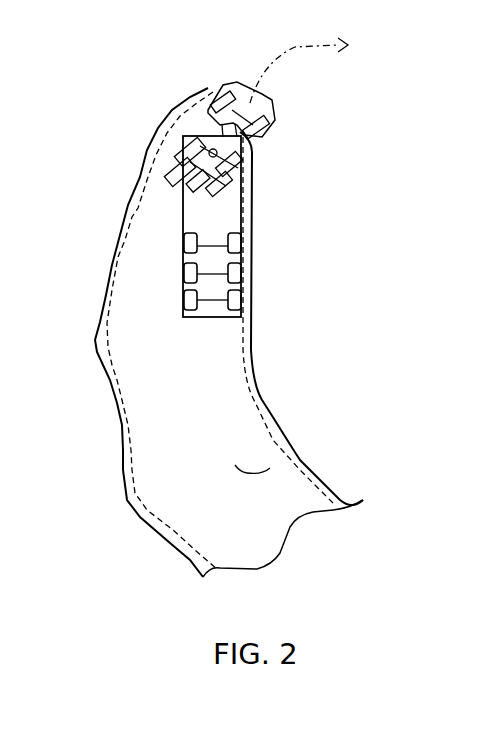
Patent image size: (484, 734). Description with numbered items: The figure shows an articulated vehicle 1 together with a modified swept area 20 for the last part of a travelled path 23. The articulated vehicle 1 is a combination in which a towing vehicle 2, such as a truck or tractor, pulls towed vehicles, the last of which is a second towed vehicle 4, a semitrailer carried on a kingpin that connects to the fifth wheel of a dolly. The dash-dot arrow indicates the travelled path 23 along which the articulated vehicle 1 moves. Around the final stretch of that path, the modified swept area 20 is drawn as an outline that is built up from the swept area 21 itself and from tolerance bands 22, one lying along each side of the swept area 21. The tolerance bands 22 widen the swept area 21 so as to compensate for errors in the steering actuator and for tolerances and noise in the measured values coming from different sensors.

The articulated vehicle 1 is at (275, 175).
The towing vehicle 2 is at (263, 108).
The second towed vehicle 4 is at (227, 202).
The modified swept area 20 is at (265, 381).
The swept area 21 is at (270, 468).
The tolerance band 22 is at (280, 430).
The travelled path 23 is at (316, 70).